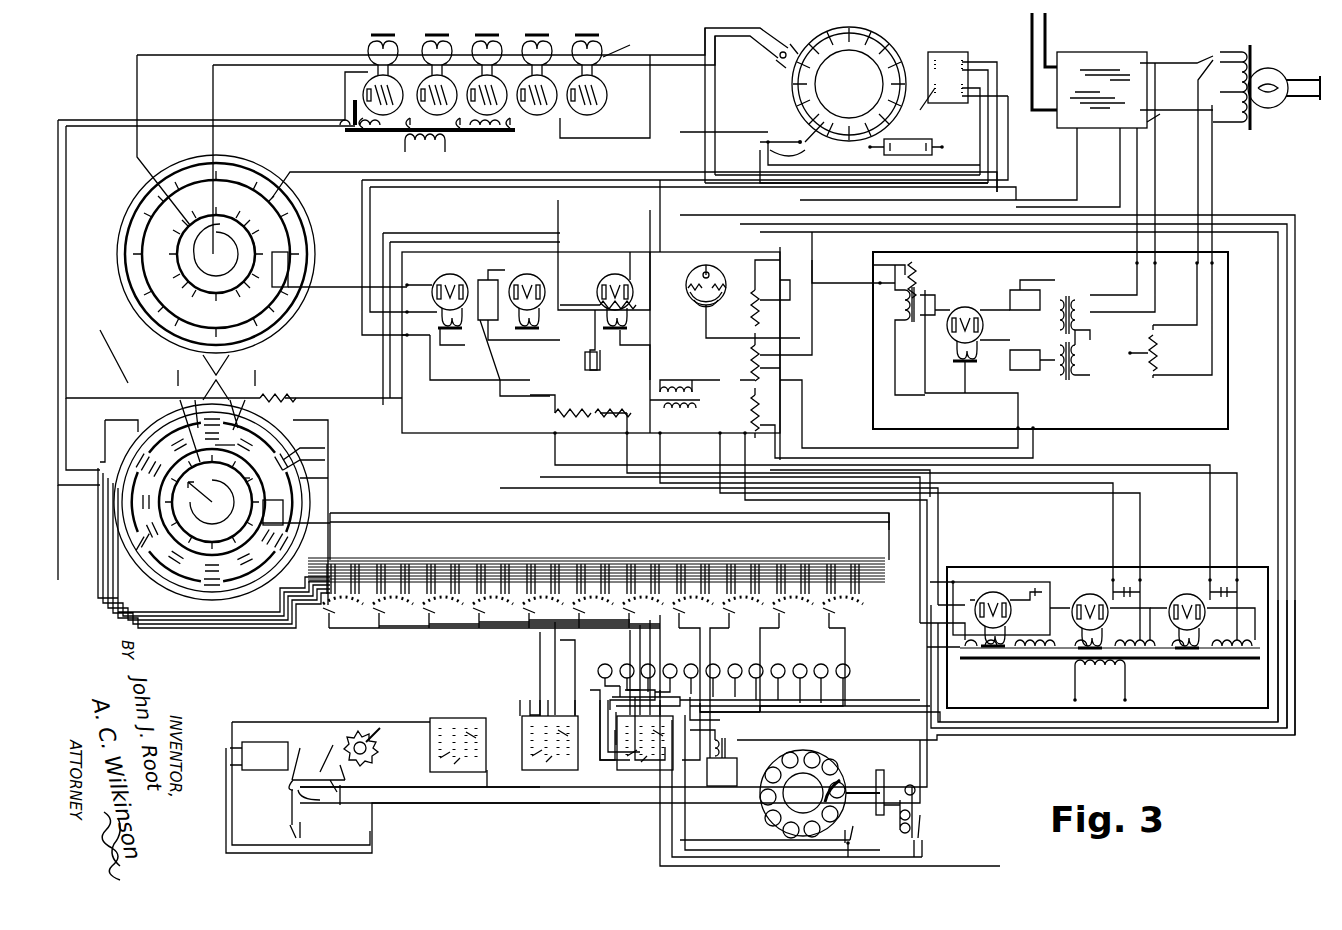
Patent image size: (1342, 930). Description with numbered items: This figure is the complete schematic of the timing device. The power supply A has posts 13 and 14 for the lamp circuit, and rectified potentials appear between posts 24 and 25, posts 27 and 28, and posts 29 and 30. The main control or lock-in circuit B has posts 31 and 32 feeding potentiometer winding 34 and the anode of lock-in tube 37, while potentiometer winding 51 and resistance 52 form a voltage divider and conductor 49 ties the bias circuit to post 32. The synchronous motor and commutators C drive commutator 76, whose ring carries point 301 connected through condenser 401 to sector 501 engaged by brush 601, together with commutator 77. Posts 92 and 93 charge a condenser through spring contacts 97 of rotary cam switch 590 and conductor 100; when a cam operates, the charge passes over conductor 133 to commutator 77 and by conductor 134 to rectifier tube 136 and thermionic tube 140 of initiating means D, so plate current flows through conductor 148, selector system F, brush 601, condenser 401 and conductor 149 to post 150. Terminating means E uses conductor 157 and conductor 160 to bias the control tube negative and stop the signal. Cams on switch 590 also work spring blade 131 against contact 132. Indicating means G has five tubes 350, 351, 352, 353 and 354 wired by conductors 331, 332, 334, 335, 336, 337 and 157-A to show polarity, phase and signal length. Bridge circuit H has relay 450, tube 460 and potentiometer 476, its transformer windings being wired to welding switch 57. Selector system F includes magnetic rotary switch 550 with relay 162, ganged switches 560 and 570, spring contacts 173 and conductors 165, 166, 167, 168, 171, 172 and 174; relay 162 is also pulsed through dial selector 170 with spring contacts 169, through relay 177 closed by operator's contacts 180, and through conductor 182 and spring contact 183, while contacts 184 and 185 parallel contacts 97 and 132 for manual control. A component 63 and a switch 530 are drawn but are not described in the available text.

The conductor 332 is at (287, 56).
The conductor 331 is at (285, 66).
The conductor 335 is at (113, 95).
The conductor 334 is at (80, 126).
The spring contacts 97 is at (786, 50).
The tube 350 is at (362, 83).
The tube 351 is at (450, 78).
The tube 352 is at (497, 85).
The tube 353 is at (548, 82).
The tube 354 is at (603, 82).
The indicating means G is at (620, 44).
The commutator 77 is at (203, 277).
The conductor 336 is at (216, 254).
The synchronous motor and commutators C is at (125, 312).
The conductor 134 is at (340, 287).
The conductor 133 is at (345, 170).
The conductor 100 is at (362, 200).
The commutator 76 is at (182, 500).
The brush 601 is at (320, 445).
The commutator sector 501 is at (320, 458).
The condenser 401 is at (238, 458).
The point of electrical connection 301 is at (262, 480).
The conductor 157 is at (440, 235).
The conductor 157-A is at (560, 195).
The means for initiating current flow D is at (503, 350).
The rectifier tube 136 is at (455, 275).
The thermionic tube 140 is at (527, 274).
The conductor 160 is at (590, 240).
The means for terminating current flow E is at (607, 250).
The conductor 49 is at (613, 274).
The conductor 337 is at (655, 210).
The main control circuit B is at (722, 245).
The lock-in tube 37 is at (692, 268).
The potentiometer winding 34 is at (770, 302).
The potentiometer winding 51 is at (884, 354).
The resistance 52 is at (886, 419).
The post 150 is at (686, 428).
The post 92 is at (555, 430).
The post 93 is at (627, 432).
The post 32 is at (929, 499).
The post 31 is at (752, 432).
The rotary cam switch 590 is at (866, 70).
The spring blade 131 is at (790, 151).
The contact 132 is at (797, 142).
The spring contact 183 is at (935, 147).
The spring contacts 184 is at (948, 62).
The contacts 185 is at (920, 108).
The welding switch 57 is at (1105, 68).
The transformer and lamp 63 is at (1250, 52).
The bridge circuit H is at (1092, 375).
The relay 450 is at (905, 310).
The tube 460 is at (968, 303).
The potentiometer 476 is at (1160, 352).
The conductor 182 is at (1302, 408).
The conductor 167 is at (1290, 448).
The conductor 166 is at (1283, 490).
The selector system F is at (705, 550).
The conductor 149 is at (440, 522).
The conductor 148 is at (889, 527).
The source of power supply A is at (1053, 562).
The post 24 is at (955, 580).
The post 25 is at (956, 592).
The post 13 is at (944, 621).
The post 14 is at (958, 650).
The post 27 is at (1112, 575).
The post 28 is at (1141, 577).
The post 29 is at (1210, 575).
The post 30 is at (1238, 577).
The conductor 172 is at (288, 722).
The relay 162 is at (259, 756).
The magnetic rotary switch 550 is at (312, 750).
The spring contacts 173 is at (290, 810).
The switch 560 is at (468, 725).
The primary switch 570 is at (545, 762).
The relay 530 is at (645, 764).
The conductor 174 is at (478, 812).
The conductor 165 is at (578, 810).
The relay 177 is at (735, 740).
The dial selector 170 is at (858, 790).
The operator's spring contacts 180 is at (866, 841).
The spring contacts 169 is at (924, 830).
The conductor 171 is at (670, 826).
The conductor 168 is at (660, 852).